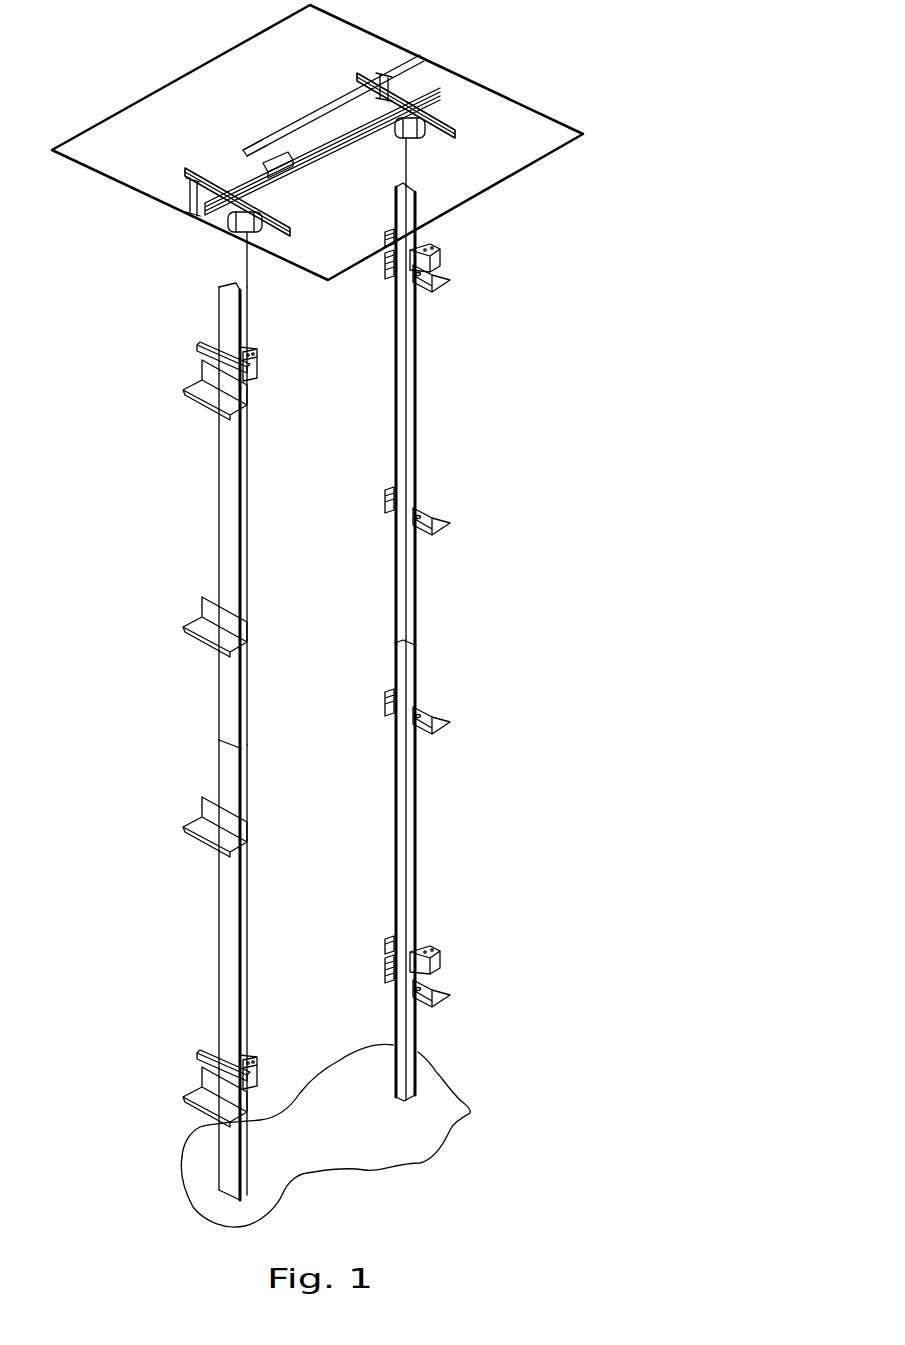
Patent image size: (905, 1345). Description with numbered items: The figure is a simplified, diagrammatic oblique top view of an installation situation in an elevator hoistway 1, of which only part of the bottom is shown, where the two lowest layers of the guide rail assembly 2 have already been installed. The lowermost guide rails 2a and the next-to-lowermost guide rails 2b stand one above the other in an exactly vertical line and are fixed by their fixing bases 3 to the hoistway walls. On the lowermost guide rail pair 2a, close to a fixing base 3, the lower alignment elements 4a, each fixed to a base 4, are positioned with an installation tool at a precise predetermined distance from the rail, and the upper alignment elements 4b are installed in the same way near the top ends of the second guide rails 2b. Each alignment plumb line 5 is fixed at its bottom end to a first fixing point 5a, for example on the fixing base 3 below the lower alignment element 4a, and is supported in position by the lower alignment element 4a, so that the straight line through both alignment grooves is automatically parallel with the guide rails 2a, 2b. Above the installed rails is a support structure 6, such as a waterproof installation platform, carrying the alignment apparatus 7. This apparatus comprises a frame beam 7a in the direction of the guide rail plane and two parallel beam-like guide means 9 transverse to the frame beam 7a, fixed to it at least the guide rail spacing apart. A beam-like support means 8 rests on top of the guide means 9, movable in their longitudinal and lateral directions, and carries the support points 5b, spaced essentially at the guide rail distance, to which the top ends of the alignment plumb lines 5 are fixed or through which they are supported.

The elevator hoistway 1 is at (470, 1110).
The guide rail assembly 2 is at (133, 715).
The lowermost guide rails 2a is at (223, 903).
The next-to-lowermost guide rails 2b is at (223, 507).
The fixing base 3 is at (198, 388).
The base 4 is at (210, 343).
The lower alignment element 4a is at (250, 1067).
The upper alignment element 4b is at (248, 360).
The alignment plumb line 5 is at (410, 150).
The first fixing point 5a is at (250, 1093).
The support point 5b is at (403, 82).
The support structure 6 is at (538, 122).
The alignment apparatus 7 is at (287, 118).
The frame beam 7a is at (252, 148).
The support means 8 is at (313, 160).
The guide means 9 is at (353, 72).